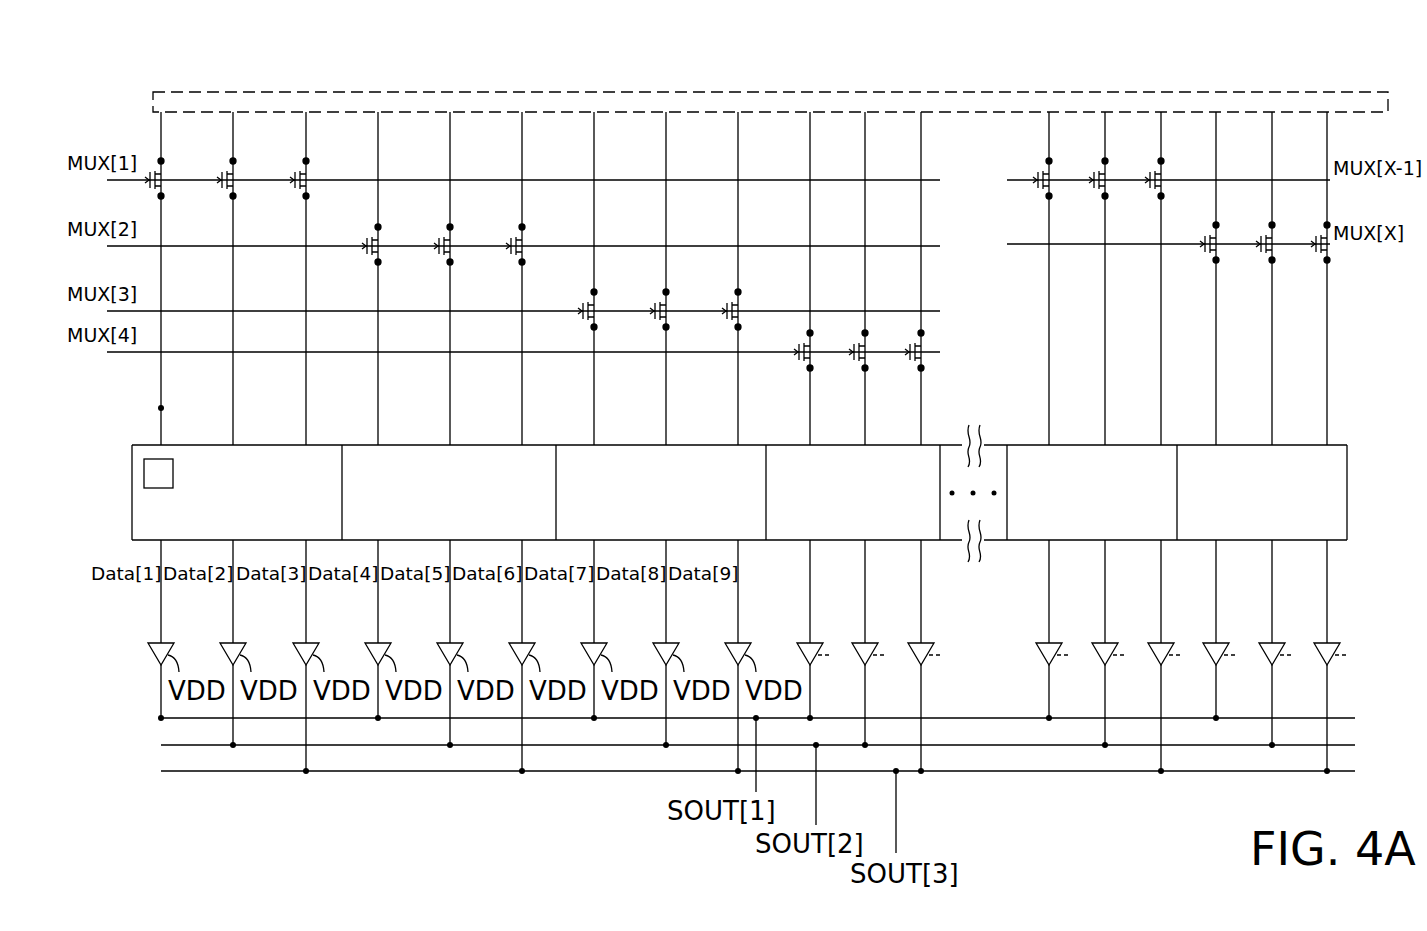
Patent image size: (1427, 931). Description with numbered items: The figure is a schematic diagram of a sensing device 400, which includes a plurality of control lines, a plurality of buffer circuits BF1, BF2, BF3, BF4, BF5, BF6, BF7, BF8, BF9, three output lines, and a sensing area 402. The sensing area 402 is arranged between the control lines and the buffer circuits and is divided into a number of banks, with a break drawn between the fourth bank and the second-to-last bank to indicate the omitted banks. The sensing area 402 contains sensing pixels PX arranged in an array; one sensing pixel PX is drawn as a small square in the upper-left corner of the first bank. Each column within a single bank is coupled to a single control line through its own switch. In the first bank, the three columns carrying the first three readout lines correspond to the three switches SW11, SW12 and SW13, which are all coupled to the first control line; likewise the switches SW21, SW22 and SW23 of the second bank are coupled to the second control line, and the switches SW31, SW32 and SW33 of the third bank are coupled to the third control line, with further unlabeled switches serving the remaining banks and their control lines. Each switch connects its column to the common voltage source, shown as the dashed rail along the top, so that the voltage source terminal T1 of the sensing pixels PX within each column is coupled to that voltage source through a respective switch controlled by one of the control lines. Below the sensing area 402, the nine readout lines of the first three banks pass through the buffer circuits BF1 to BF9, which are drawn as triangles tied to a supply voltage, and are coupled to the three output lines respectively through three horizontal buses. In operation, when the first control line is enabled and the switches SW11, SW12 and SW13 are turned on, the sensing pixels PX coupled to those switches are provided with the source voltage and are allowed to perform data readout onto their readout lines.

The sensing device 400 is at (175, 59).
The sensing area 402 is at (123, 501).
The sensing pixel PX is at (139, 459).
The voltage source terminal T1 is at (177, 407).
The switch SW11 is at (163, 177).
The switch SW12 is at (235, 177).
The switch SW13 is at (308, 177).
The switch SW21 is at (380, 243).
The switch SW22 is at (452, 243).
The switch SW23 is at (524, 243).
The switch SW31 is at (596, 308).
The switch SW32 is at (668, 308).
The switch SW33 is at (740, 308).
The buffer circuit BF1 is at (163, 644).
The buffer circuit BF2 is at (235, 644).
The buffer circuit BF3 is at (308, 644).
The buffer circuit BF4 is at (380, 644).
The buffer circuit BF5 is at (452, 644).
The buffer circuit BF6 is at (524, 644).
The buffer circuit BF7 is at (596, 644).
The buffer circuit BF8 is at (668, 644).
The buffer circuit BF9 is at (740, 644).